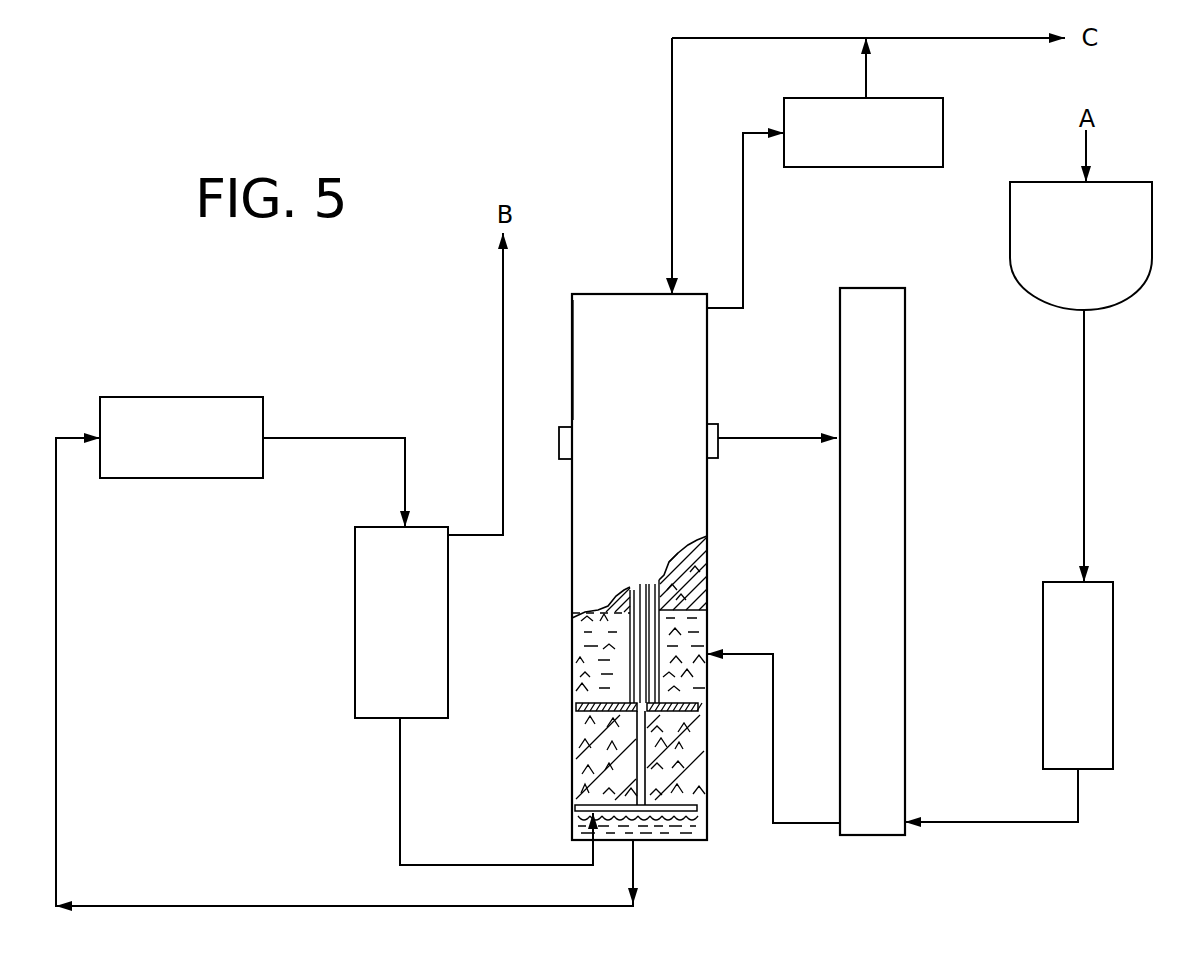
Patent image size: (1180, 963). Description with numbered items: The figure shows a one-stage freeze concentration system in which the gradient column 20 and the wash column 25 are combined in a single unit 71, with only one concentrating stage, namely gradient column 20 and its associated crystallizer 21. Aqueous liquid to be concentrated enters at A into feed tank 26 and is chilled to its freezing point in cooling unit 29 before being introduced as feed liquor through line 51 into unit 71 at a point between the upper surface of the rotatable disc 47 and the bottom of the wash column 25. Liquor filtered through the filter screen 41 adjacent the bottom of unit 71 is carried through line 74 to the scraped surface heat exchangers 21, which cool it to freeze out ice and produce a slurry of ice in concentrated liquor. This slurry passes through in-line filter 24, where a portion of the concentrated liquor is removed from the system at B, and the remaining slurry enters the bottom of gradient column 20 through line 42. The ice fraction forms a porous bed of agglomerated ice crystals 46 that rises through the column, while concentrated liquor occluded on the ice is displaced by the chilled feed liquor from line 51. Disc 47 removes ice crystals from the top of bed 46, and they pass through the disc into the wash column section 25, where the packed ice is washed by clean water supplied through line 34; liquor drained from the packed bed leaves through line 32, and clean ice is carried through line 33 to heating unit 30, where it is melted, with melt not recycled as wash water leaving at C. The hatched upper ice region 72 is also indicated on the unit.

The gradient column 20 is at (572, 745).
The crystallizer 21 is at (168, 448).
The in-line filter 24 is at (418, 644).
The wash column 25 is at (572, 347).
The feed tank 26 is at (1066, 242).
The cooling unit 29 is at (1061, 671).
The heating unit 30 is at (851, 146).
The line 32 is at (769, 438).
The line 33 is at (744, 248).
The line 34 is at (672, 226).
The filter screen 41 is at (705, 830).
The pipe 42 is at (861, 416).
The porous bed 46 is at (698, 743).
The rotatable disc 47 is at (698, 706).
The line 51 is at (775, 680).
The single unit 71 is at (560, 610).
The solids layer 72 is at (716, 538).
The line 74 is at (562, 906).